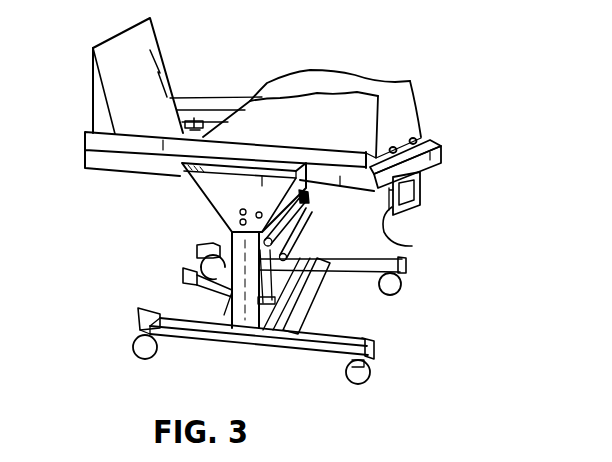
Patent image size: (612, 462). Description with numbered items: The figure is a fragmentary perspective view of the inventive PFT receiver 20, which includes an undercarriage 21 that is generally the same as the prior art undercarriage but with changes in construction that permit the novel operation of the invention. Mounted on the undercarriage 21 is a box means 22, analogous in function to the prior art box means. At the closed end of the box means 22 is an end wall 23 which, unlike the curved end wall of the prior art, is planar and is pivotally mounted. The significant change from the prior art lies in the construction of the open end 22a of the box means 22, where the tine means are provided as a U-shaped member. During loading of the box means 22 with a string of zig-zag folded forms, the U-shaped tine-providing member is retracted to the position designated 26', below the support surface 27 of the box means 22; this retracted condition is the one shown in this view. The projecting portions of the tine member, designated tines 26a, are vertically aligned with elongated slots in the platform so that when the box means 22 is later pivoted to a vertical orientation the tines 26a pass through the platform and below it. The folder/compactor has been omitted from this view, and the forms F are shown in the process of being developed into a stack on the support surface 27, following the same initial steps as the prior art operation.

The PFT receiver 20 is at (150, 250).
The undercarriage 21 is at (257, 348).
The box means 22 is at (430, 119).
The open end 22a is at (438, 132).
The end wall 23 is at (118, 87).
The retracted position of tine member 26' is at (428, 193).
The tines 26a is at (412, 246).
The support surface 27 is at (193, 128).
The forms F is at (312, 88).